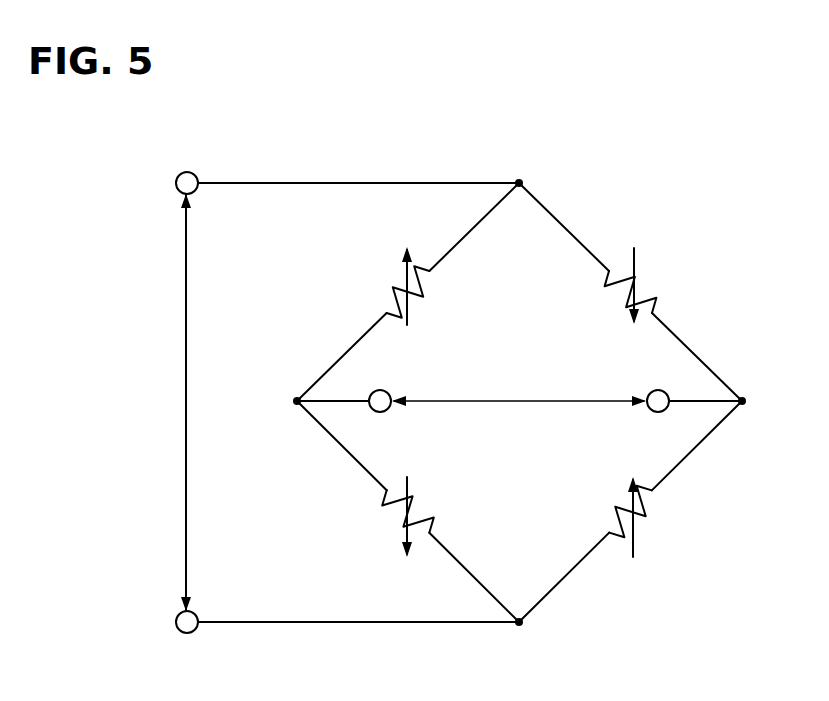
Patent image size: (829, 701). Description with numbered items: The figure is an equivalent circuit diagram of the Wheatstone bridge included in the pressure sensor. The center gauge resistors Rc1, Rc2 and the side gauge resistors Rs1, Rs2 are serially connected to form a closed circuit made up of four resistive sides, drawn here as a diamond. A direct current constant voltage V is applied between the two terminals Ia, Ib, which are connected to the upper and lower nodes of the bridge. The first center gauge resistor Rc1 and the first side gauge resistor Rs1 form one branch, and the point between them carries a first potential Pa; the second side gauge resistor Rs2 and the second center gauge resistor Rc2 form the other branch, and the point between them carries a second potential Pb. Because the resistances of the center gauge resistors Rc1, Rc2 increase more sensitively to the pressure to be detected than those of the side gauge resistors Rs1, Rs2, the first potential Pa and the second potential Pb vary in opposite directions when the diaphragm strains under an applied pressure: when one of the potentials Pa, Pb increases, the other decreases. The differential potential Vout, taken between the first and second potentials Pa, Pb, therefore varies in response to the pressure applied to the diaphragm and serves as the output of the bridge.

The terminal Ia is at (177, 172).
The terminal Ib is at (177, 632).
The direct current constant voltage V is at (169, 402).
The first center gauge resistor Rc1 is at (390, 280).
The first side gauge resistor Rs1 is at (397, 526).
The second side gauge resistor Rs2 is at (645, 270).
The second center gauge resistor Rc2 is at (650, 520).
The first potential Pa is at (385, 390).
The second potential Pb is at (652, 390).
The differential potential Vout is at (519, 389).